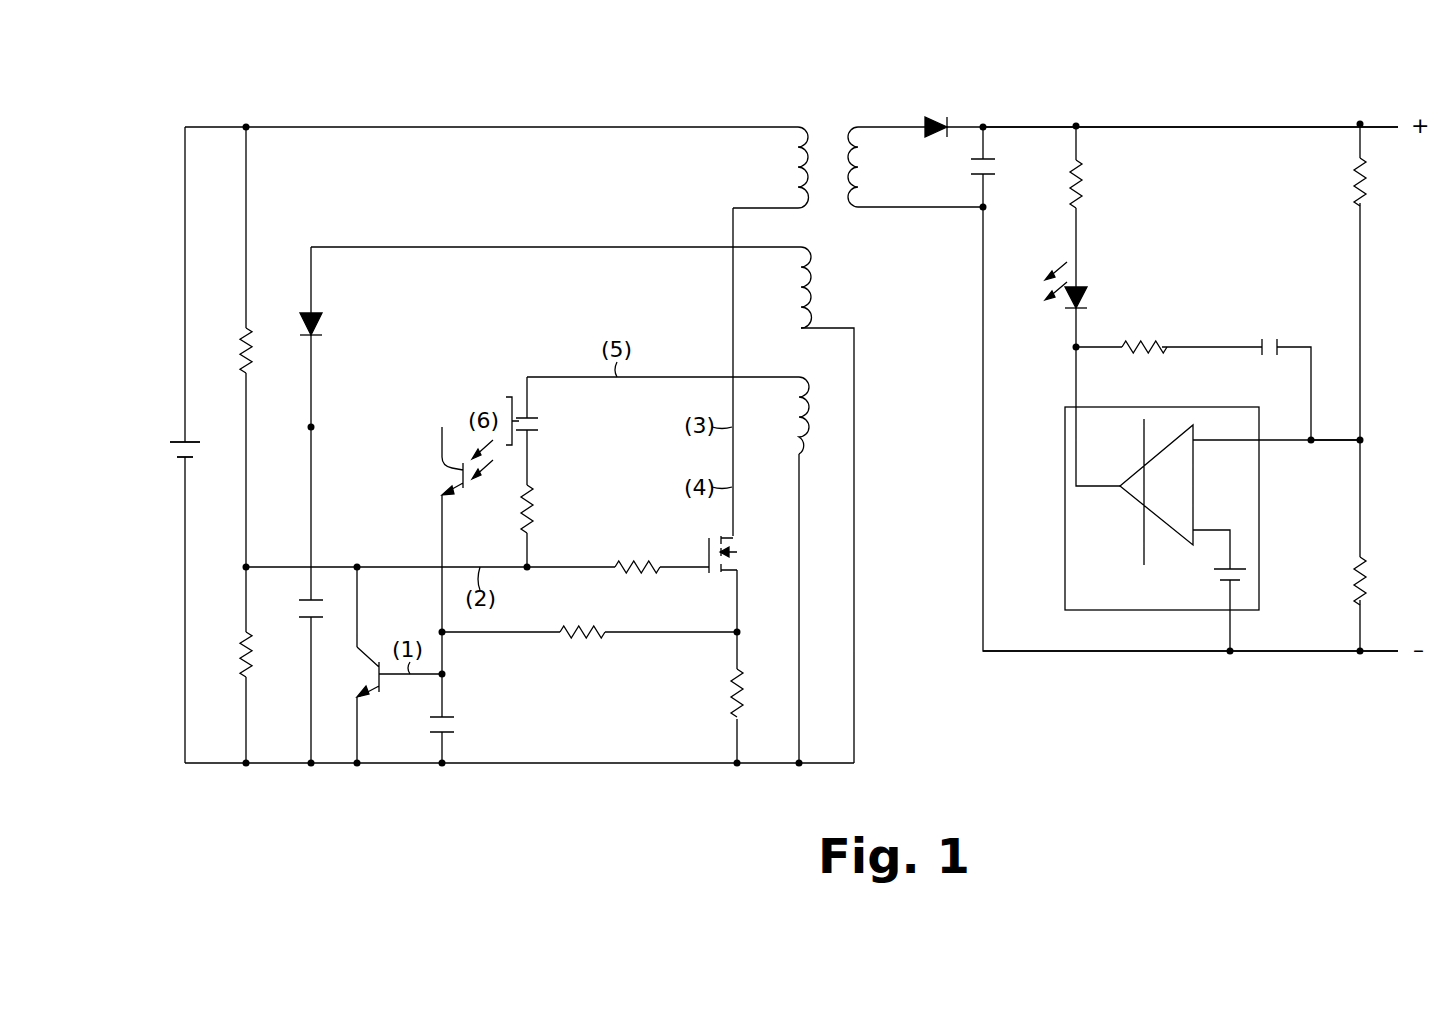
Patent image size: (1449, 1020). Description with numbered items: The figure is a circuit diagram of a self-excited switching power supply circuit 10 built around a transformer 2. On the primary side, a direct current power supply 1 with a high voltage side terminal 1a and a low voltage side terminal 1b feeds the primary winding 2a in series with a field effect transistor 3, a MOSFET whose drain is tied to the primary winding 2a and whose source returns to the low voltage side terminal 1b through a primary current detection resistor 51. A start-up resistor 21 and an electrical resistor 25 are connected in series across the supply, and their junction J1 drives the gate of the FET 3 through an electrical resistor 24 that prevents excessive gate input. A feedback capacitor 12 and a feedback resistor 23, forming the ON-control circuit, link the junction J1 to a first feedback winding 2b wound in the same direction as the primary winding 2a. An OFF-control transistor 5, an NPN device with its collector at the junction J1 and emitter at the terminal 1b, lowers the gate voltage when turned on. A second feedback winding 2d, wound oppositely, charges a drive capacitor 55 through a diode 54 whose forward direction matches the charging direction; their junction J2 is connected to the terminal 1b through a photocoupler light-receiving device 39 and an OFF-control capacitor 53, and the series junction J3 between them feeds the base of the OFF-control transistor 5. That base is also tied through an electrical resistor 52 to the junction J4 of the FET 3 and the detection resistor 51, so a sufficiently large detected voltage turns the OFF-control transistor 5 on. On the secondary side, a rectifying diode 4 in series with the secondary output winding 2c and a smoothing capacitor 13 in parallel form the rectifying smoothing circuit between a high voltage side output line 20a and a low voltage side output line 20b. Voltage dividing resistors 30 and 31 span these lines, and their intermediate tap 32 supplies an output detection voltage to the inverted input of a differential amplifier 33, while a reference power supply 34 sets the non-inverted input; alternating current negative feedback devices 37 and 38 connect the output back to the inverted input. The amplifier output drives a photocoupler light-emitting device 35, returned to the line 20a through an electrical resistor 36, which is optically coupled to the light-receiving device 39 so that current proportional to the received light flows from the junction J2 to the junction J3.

The self-excited switching power supply circuit 10 is at (326, 62).
The direct current power supply 1 is at (174, 450).
The high voltage side terminal 1a is at (196, 430).
The low voltage side terminal 1b is at (200, 472).
The transformer 2 is at (815, 280).
The primary winding 2a is at (771, 167).
The first feedback winding 2b is at (783, 420).
The secondary output winding 2c is at (873, 163).
The second feedback winding 2d is at (785, 292).
The field effect transistor 3 is at (733, 554).
The rectifying diode 4 is at (934, 117).
The OFF-control transistor 5 is at (387, 679).
The feedback capacitor 12 is at (542, 425).
The smoothing capacitor 13 is at (998, 170).
The high voltage side output line 20a is at (1215, 124).
The low voltage side output line 20b is at (1285, 651).
The start-up resistor 21 is at (227, 350).
The feedback resistor 23 is at (543, 509).
The electrical resistor 24 is at (637, 554).
The electrical resistor 25 is at (227, 660).
The voltage dividing resistor 30 is at (1341, 182).
The voltage dividing resistor 31 is at (1339, 581).
The intermediate tap 32 is at (1356, 440).
The differential amplifier 33 is at (1162, 508).
The reference power supply 34 is at (1213, 583).
The photocoupler light-emitting device 35 is at (1084, 285).
The electrical resistor 36 is at (1097, 184).
The alternating current negative feedback device 37 is at (1144, 329).
The alternating current negative feedback device 38 is at (1267, 328).
The photocoupler light-receiving device 39 is at (467, 480).
The primary current detection resistor 51 is at (719, 693).
The electrical resistor 52 is at (582, 647).
The OFF-control capacitor 53 is at (459, 731).
The diode 54 is at (330, 325).
The drive capacitor 55 is at (295, 610).
The junction J1 is at (220, 569).
The junction J2 is at (284, 428).
The series junction J3 is at (463, 683).
The junction J4 is at (758, 647).